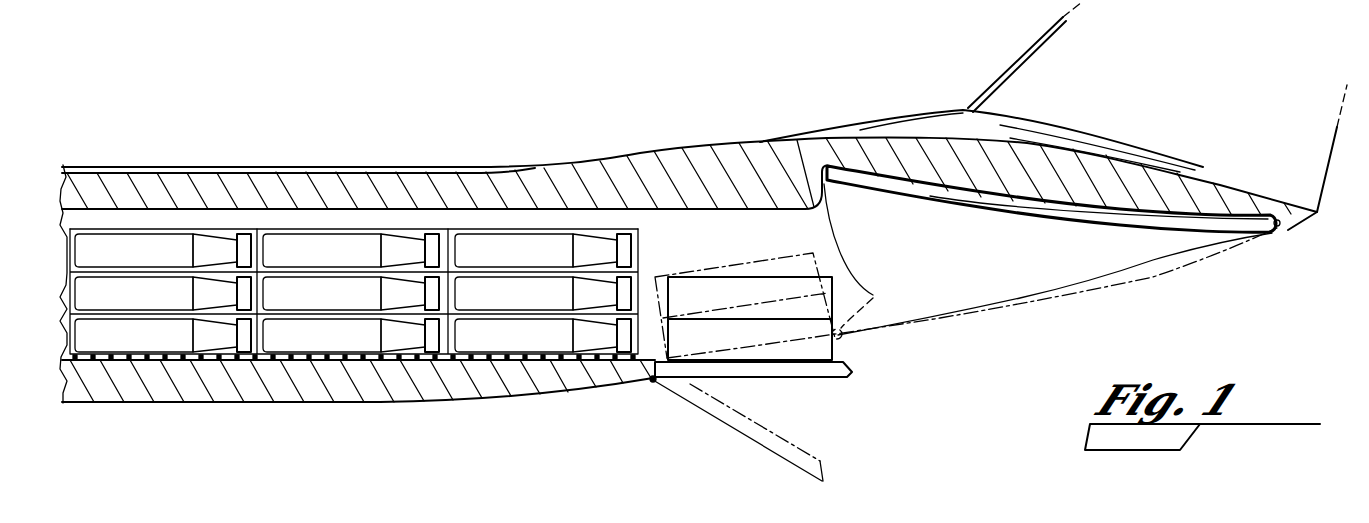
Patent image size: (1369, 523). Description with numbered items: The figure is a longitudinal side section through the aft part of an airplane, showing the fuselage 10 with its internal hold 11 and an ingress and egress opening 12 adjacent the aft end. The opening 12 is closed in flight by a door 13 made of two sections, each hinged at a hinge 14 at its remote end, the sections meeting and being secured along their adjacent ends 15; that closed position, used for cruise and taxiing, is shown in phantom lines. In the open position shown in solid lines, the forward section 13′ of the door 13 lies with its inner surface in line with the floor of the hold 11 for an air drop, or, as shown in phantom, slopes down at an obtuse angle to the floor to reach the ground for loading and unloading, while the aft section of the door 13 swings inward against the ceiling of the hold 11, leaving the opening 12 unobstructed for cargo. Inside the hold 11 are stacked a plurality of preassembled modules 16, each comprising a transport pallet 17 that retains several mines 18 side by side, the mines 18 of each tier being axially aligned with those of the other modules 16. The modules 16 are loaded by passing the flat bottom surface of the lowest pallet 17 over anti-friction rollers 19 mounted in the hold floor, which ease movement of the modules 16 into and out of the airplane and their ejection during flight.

The fuselage 10 is at (578, 172).
The internal hold 11 is at (713, 227).
The ingress and egress opening 12 is at (840, 350).
The door 13 is at (938, 207).
The forward section of the door 13′ is at (757, 372).
The hinge 14 is at (1277, 232).
The adjacent ends of the door sections 15 is at (825, 470).
The module 16 is at (225, 230).
The transport pallet 17 is at (468, 357).
The mine 18 is at (150, 256).
The rollers 19 is at (268, 358).